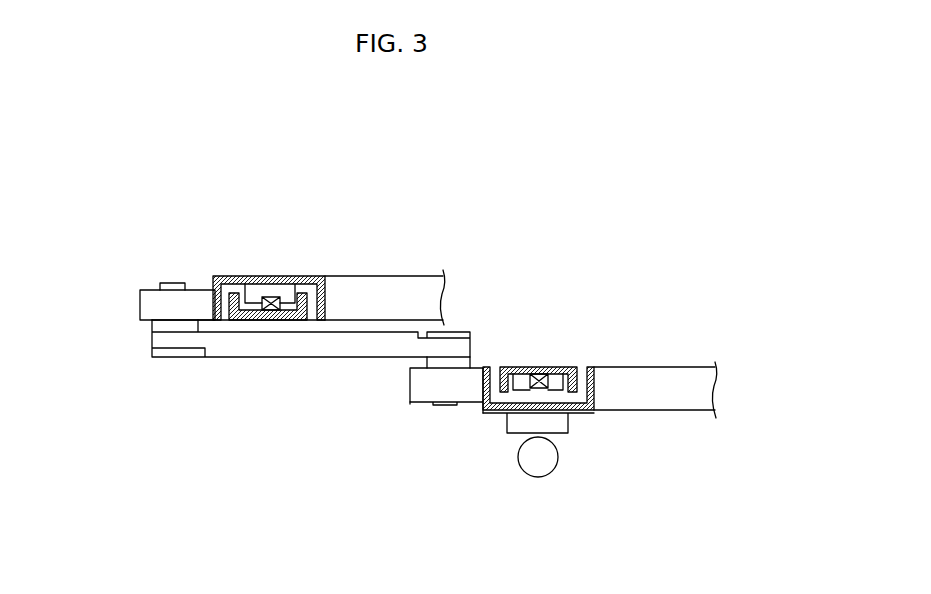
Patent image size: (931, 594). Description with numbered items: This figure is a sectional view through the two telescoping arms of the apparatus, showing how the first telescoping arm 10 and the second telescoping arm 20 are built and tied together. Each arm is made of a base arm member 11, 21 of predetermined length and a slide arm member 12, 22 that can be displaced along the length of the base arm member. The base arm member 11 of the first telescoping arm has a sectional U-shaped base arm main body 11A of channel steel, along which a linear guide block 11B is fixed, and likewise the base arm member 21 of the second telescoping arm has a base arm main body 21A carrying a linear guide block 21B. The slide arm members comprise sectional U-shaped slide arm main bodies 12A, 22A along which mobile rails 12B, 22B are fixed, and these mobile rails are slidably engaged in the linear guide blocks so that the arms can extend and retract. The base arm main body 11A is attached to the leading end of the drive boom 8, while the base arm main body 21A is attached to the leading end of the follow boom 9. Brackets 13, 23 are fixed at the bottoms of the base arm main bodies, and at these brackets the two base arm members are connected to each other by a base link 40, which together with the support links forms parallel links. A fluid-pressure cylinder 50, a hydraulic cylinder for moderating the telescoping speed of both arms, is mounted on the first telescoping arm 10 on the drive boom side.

The drive boom 8 is at (684, 411).
The follow boom 9 is at (397, 290).
The first telescoping arm 10 is at (595, 452).
The base arm member 11 is at (508, 495).
The base arm main body 11A is at (482, 417).
The linear guide block 11B is at (523, 412).
The slide arm member 12 is at (597, 280).
The slide arm main body 12A is at (525, 367).
The mobile rail 12B is at (548, 367).
The bracket 13 is at (410, 402).
The second telescoping arm 20 is at (215, 239).
The base arm member 21 is at (340, 182).
The base arm main body 21A is at (267, 276).
The linear guide block 21B is at (292, 276).
The slide arm member 22 is at (310, 423).
The slide arm main body 22A is at (263, 312).
The mobile rail 22B is at (278, 312).
The bracket 23 is at (140, 302).
The base link 40 is at (363, 357).
The fluid-pressure cylinder 50 is at (545, 477).